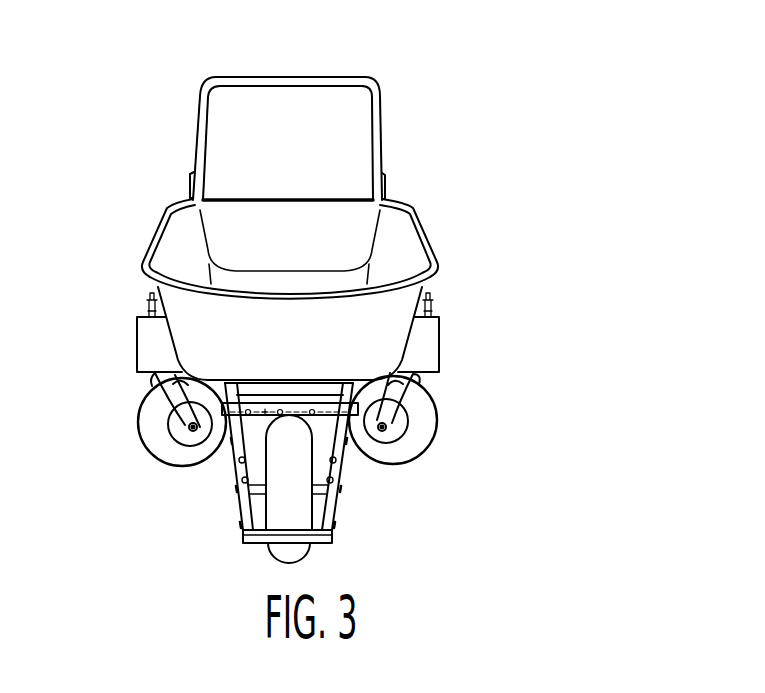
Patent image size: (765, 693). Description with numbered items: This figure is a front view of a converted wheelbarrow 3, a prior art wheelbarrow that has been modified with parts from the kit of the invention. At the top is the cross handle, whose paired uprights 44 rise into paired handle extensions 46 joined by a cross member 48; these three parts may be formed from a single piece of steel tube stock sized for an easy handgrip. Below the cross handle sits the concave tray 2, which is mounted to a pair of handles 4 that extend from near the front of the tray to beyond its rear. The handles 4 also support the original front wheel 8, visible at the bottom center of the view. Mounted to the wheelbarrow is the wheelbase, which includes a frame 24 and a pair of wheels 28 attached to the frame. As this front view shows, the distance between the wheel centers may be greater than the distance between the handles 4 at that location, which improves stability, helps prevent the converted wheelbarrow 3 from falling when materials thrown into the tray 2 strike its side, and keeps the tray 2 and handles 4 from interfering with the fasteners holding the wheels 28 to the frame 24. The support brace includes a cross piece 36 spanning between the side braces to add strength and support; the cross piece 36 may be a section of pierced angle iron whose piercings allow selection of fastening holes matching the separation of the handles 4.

The converted wheelbarrow 3 is at (606, 144).
The cross member 48 is at (268, 82).
The handle extensions 46 is at (200, 112).
The uprights 44 is at (197, 187).
The tray 2 is at (175, 237).
The frame 24 is at (430, 343).
The wheels 28 is at (147, 418).
The cross piece 36 is at (265, 415).
The handles 4 is at (248, 505).
The front wheel 8 is at (297, 502).